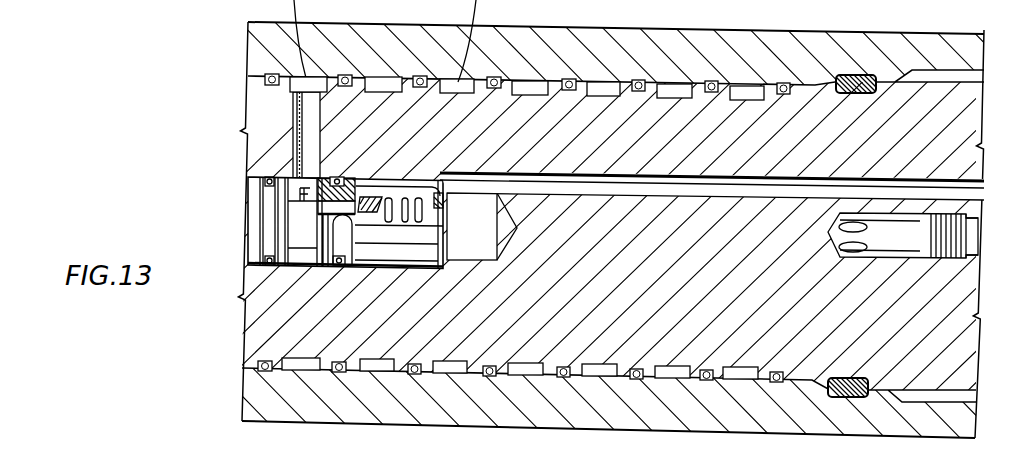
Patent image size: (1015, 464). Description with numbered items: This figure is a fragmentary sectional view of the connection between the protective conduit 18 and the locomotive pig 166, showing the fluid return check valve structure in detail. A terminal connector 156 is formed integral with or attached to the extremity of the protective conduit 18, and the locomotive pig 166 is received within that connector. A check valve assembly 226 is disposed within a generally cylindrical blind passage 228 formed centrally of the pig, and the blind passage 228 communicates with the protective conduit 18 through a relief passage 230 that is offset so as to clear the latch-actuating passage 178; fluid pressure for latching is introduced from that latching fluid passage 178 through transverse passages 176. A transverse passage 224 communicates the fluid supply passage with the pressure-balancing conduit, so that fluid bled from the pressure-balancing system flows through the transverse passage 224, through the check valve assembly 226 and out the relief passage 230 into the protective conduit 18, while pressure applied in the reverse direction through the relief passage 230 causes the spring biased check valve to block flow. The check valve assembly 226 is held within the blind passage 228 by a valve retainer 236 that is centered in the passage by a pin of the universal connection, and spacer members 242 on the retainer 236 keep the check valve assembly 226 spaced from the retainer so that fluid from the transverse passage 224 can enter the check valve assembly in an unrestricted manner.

The protective conduit 18 is at (921, 40).
The terminal connector 156 is at (247, 40).
The locomotive pig 166 is at (258, 328).
The transverse passages 176 is at (840, 246).
The latching fluid passage 178 is at (897, 255).
The transverse passage 224 is at (296, 119).
The check valve assembly 226 is at (387, 269).
The blind passage 228 is at (423, 268).
The relief passage 230 is at (632, 173).
The valve retainer 236 is at (252, 226).
The spacer members 242 is at (300, 189).